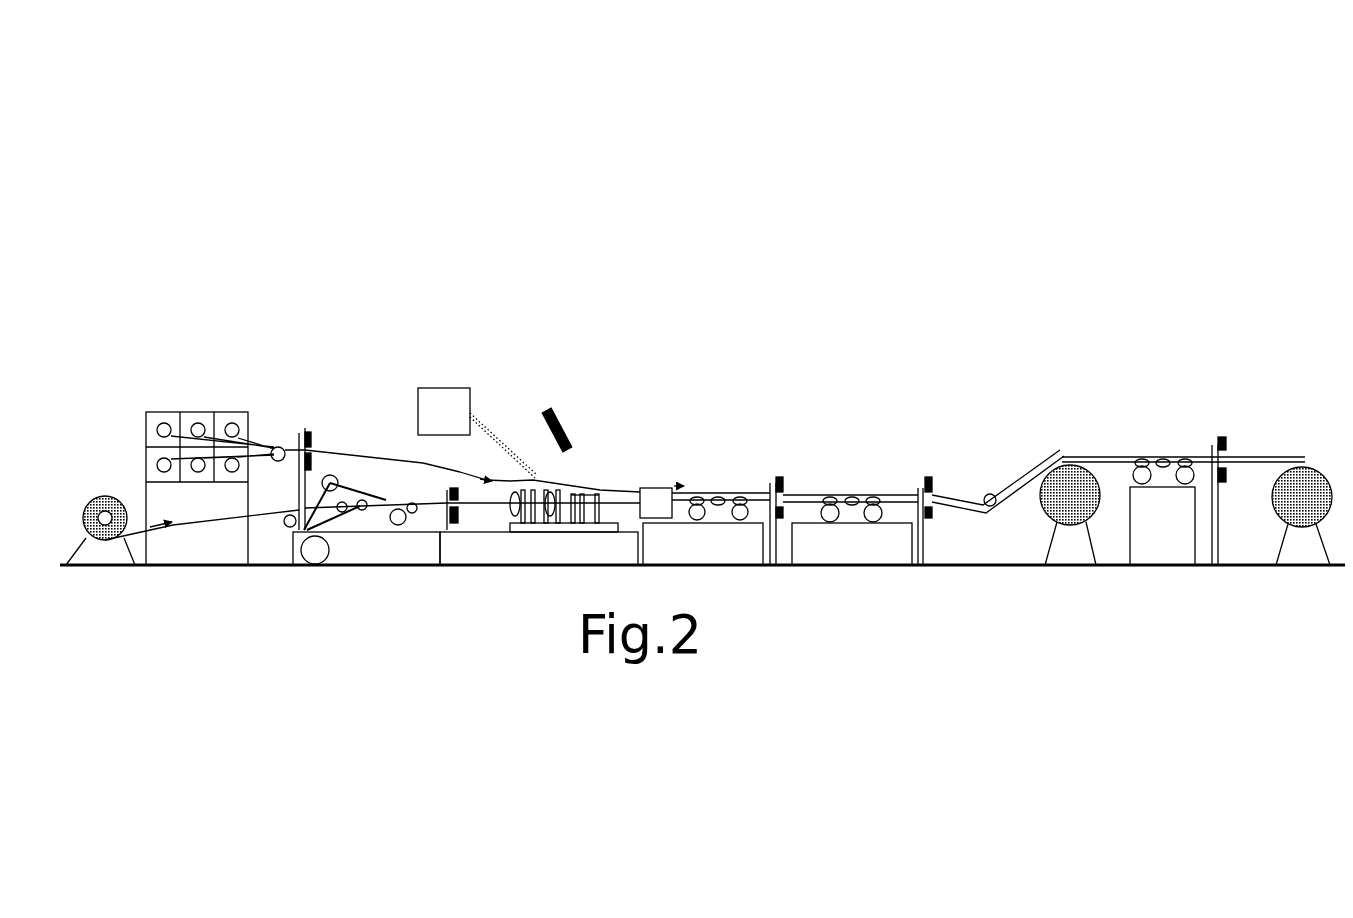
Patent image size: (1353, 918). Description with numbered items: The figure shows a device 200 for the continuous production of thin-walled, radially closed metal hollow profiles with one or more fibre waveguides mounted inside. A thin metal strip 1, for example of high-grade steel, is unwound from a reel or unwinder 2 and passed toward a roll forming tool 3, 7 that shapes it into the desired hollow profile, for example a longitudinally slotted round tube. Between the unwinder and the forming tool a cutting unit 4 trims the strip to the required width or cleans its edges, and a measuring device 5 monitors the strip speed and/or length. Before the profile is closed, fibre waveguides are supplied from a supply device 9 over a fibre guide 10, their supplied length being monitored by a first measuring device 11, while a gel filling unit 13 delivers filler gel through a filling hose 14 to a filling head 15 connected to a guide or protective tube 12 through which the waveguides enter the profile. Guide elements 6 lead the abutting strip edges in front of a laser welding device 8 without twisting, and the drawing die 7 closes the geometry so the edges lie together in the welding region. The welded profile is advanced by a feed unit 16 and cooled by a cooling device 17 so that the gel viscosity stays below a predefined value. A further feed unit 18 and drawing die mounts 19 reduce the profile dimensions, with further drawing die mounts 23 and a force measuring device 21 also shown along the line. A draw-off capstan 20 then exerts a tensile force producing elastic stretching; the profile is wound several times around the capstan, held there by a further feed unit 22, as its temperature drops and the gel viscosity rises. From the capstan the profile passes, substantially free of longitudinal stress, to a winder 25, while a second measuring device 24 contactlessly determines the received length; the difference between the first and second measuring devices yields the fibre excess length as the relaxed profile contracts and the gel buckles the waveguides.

The device 200 is at (227, 157).
The reel or unwinder 2 is at (105, 486).
The supply device 9 is at (162, 406).
The metal strip 1 is at (280, 438).
The fibre guide 10 is at (270, 508).
The first measuring device 11 is at (307, 426).
The cutting unit 4 is at (385, 496).
The measuring device 5 is at (445, 533).
The gel filling unit 13 is at (443, 384).
The filling hose 14 is at (497, 418).
The filling head 15 is at (540, 469).
The guide or protective tube 12 is at (553, 465).
The laser welding device 8 is at (557, 400).
The guide elements 6 is at (574, 476).
The drawing die 7 is at (598, 476).
The cooling device 17 is at (575, 476).
The roll forming tool 3 is at (656, 480).
The feed unit 16 is at (719, 484).
The drawing die mounts 19 is at (780, 465).
The further feed unit 18 is at (855, 484).
The drawing die mounts 23 is at (928, 467).
The force measuring device 21 is at (985, 483).
The draw-off capstan 20 is at (1070, 451).
The further feed unit 22 is at (1165, 449).
The second measuring device 24 is at (1213, 434).
The winder 25 is at (1302, 455).